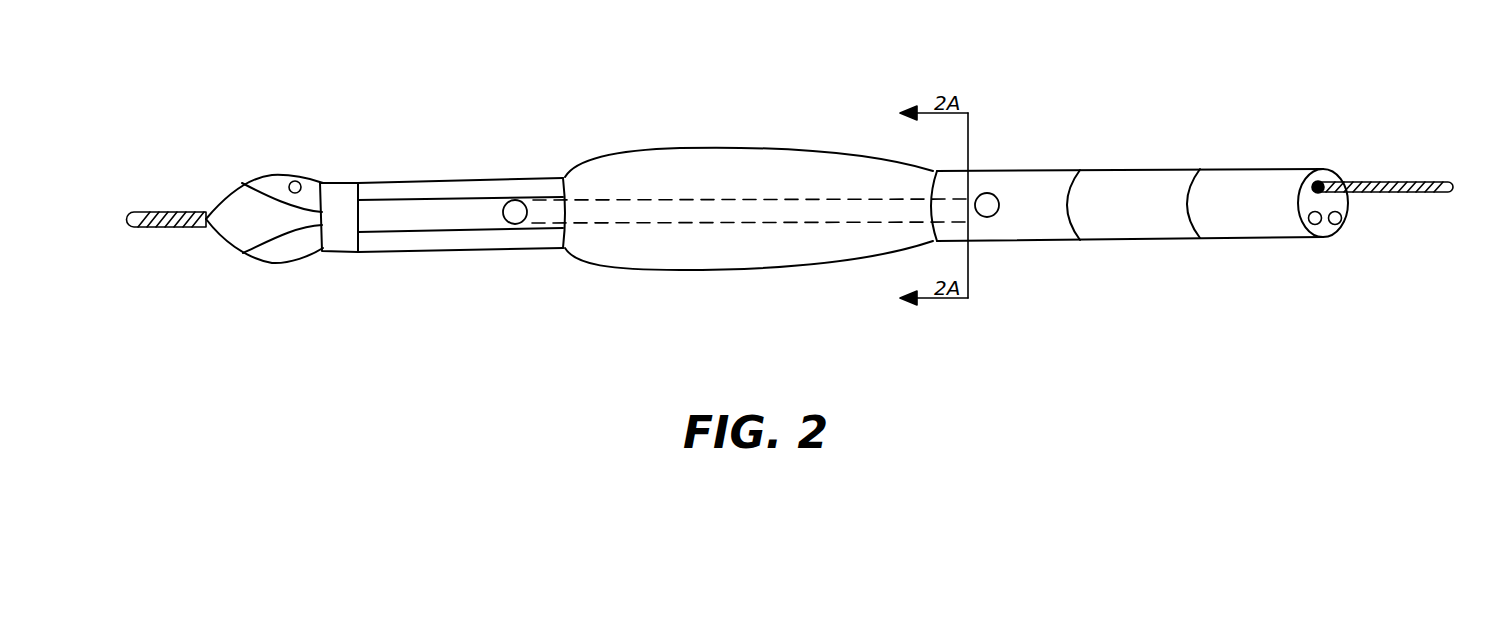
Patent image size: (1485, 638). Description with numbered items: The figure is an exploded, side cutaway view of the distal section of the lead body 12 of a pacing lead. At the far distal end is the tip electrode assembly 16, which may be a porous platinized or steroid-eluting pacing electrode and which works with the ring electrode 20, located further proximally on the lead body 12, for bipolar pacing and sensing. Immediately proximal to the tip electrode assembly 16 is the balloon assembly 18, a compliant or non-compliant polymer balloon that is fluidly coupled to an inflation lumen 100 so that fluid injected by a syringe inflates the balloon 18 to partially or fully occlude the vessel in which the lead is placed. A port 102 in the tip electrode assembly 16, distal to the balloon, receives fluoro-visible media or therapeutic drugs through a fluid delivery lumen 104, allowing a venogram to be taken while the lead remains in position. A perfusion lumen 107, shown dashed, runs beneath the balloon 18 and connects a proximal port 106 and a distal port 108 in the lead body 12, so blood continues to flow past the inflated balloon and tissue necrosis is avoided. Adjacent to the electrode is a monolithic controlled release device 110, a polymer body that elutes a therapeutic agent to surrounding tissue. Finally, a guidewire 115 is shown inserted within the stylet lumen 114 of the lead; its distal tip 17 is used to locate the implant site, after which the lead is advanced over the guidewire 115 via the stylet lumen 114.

The lead body 12 is at (1252, 239).
The tip electrode assembly 16 is at (273, 264).
The distal tip of guidewire 17 is at (151, 211).
The balloon assembly 18 is at (727, 148).
The ring electrode 20 is at (1105, 168).
The inflation lumen 100 is at (1340, 224).
The port 102 is at (298, 182).
The fluid delivery lumen 104 is at (1312, 224).
The proximal port 106 is at (993, 208).
The perfusion lumen 107 is at (703, 222).
The distal port 108 is at (520, 217).
The monolithic controlled release device 110 is at (345, 240).
The stylet lumen 114 is at (1318, 181).
The guidewire 115 is at (1363, 181).